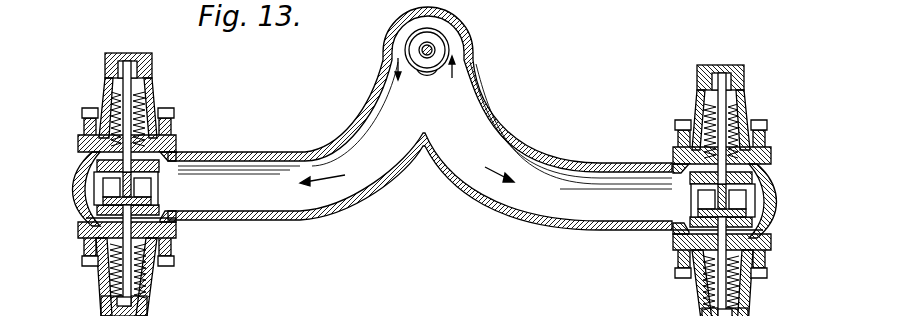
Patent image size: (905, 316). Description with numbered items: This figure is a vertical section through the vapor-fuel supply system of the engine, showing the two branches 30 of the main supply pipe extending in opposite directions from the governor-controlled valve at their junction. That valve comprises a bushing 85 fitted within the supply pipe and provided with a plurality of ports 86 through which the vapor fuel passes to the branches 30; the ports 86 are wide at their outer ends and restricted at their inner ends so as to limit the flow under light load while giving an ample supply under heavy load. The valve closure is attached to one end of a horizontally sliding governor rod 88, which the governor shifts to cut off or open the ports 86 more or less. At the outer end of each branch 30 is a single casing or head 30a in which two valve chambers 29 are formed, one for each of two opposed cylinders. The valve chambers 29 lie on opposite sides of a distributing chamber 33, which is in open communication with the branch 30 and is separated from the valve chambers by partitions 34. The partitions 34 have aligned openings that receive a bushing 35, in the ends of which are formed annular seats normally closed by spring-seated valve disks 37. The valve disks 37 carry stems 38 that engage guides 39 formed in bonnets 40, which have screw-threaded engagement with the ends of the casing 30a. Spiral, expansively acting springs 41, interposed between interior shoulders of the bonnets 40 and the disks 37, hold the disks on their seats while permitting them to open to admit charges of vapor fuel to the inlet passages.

The valve chamber 29 is at (768, 238).
The branch 30 is at (420, 118).
The casing or head 30a is at (778, 196).
The distributing chamber 33 is at (776, 185).
The partition 34 is at (176, 221).
The bushing 35 is at (774, 204).
The valve disk 37 is at (673, 157).
The stem 38 is at (750, 299).
The guide 39 is at (100, 295).
The bonnet 40 is at (696, 297).
The spring 41 is at (768, 263).
The bushing 85 is at (445, 36).
The port 86 is at (426, 72).
The governor rod 88 is at (405, 48).